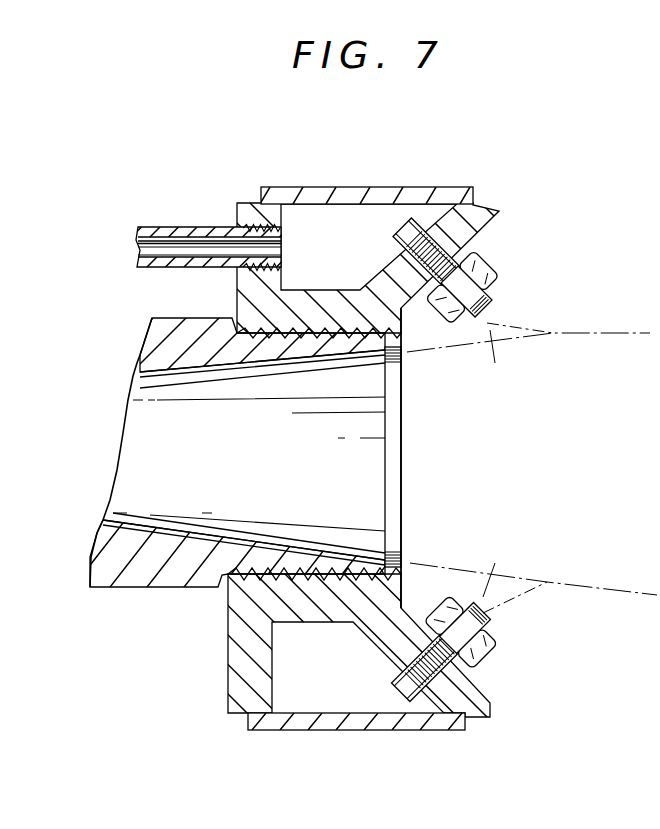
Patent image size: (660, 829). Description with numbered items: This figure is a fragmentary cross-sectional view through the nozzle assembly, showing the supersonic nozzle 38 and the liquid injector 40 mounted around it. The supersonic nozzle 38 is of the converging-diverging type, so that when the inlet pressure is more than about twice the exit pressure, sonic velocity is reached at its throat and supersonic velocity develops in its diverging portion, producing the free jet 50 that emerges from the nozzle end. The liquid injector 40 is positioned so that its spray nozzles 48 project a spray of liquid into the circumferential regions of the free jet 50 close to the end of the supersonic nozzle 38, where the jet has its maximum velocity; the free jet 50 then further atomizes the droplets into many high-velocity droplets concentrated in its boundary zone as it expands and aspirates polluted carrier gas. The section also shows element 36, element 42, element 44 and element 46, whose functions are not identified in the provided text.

The pipe 36 is at (188, 226).
The supersonic nozzle 38 is at (166, 317).
The liquid injector 40 is at (477, 184).
The lower clamp body 42 is at (228, 640).
The cavity 44 is at (351, 680).
The bottom plate 46 is at (390, 732).
The spray nozzles 48 is at (490, 663).
The free jet 50 is at (506, 427).